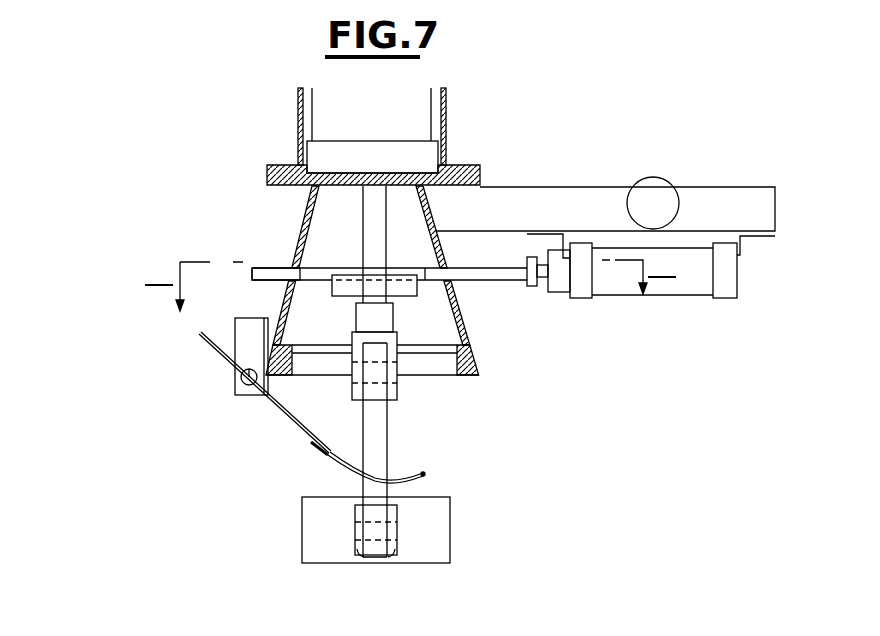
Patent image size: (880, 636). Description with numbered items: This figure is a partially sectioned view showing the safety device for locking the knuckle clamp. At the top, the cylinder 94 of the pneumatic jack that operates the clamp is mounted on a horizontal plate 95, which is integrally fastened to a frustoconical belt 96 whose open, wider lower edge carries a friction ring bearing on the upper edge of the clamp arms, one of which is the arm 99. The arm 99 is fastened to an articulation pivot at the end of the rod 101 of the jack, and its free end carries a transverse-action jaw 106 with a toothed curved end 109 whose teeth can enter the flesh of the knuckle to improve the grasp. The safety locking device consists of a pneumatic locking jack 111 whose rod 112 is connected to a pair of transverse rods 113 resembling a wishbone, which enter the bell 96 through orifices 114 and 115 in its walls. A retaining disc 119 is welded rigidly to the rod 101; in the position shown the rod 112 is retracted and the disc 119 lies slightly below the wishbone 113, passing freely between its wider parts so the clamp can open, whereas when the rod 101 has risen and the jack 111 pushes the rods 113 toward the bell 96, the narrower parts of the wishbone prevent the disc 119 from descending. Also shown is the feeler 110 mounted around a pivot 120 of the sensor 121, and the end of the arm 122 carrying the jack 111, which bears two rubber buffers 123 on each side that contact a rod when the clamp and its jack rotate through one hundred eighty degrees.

The cylinder 94 is at (413, 111).
The horizontal plate 95 is at (470, 165).
The frustoconical belt 96 is at (302, 233).
The arm 99 is at (372, 430).
The rod 101 is at (373, 212).
The transverse-action jaw 106 is at (390, 557).
The curved end 109 is at (440, 537).
The feeler 110 is at (425, 473).
The pneumatic locking jack 111 is at (620, 283).
The rod 112 is at (540, 286).
The transverse rods 113 is at (252, 280).
The orifice 114 is at (455, 283).
The orifice 115 is at (292, 268).
The retaining disc 119 is at (405, 296).
The pivot 120 is at (250, 386).
The sensor 121 is at (238, 388).
The arm 122 is at (582, 200).
The rubber buffer 123 is at (648, 190).